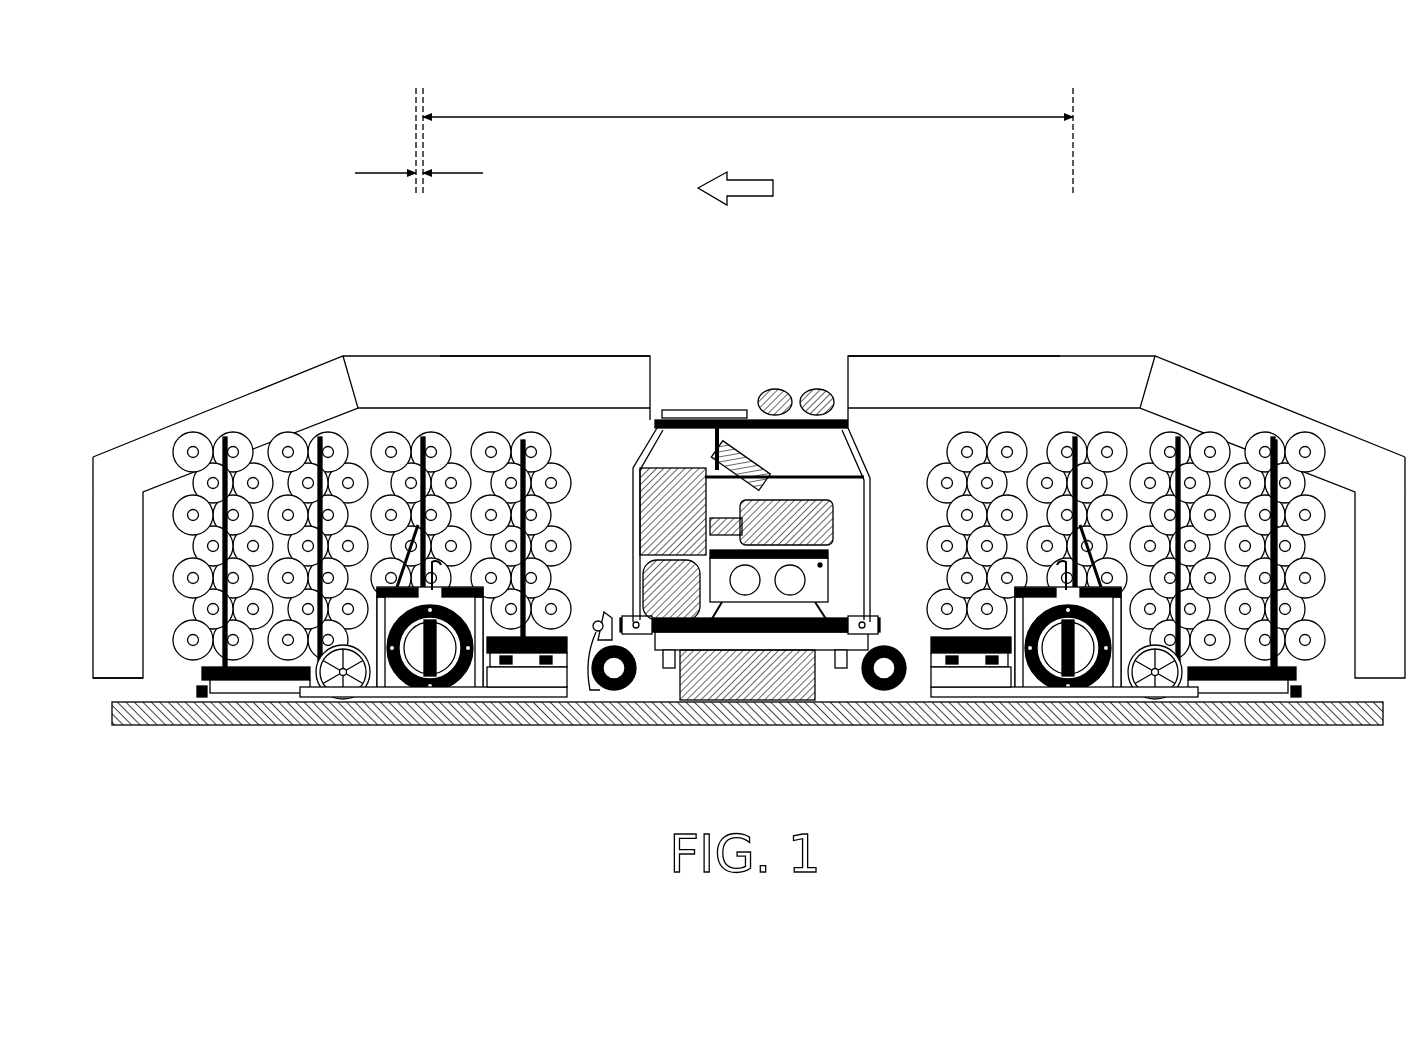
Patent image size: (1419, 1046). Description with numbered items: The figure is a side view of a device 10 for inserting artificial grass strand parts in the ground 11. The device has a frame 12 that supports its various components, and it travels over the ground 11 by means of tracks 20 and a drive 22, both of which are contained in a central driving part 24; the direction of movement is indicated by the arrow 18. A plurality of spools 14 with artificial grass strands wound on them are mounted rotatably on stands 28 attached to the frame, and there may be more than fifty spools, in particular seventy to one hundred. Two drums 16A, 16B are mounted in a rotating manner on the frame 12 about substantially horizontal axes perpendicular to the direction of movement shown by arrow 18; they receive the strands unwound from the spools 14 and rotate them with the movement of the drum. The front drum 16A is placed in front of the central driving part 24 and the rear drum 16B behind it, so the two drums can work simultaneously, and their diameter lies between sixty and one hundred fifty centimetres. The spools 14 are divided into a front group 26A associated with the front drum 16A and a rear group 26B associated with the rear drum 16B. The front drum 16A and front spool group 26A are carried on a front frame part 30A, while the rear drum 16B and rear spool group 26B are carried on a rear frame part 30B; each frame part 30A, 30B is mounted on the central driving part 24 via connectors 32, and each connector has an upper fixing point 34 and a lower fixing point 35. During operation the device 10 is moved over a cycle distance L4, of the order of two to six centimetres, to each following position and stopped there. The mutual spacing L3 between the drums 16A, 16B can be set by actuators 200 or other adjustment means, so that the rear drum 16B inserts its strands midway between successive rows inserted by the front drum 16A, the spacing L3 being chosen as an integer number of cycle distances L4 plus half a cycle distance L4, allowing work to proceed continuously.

The device 10 is at (242, 268).
The ground 11 is at (245, 712).
The frame 12 is at (640, 458).
The spools 14 is at (202, 450).
The front drum 16A is at (420, 693).
The rear drum 16B is at (1040, 693).
The arrow 18 is at (747, 200).
The tracks 20 is at (627, 676).
The drive 22 is at (690, 605).
The central driving part 24 is at (798, 349).
The front group of spools 26A is at (376, 349).
The rear group of spools 26B is at (1158, 349).
The stands 28 is at (521, 440).
The front frame part 30A is at (475, 349).
The rear frame part 30B is at (1059, 349).
The connectors 32 is at (567, 660).
The upper fixing point 34 is at (596, 630).
The lower fixing point 35 is at (584, 692).
The actuators 200 is at (645, 630).
The mutual spacing L3 is at (712, 117).
The cycle distance L4 is at (371, 173).